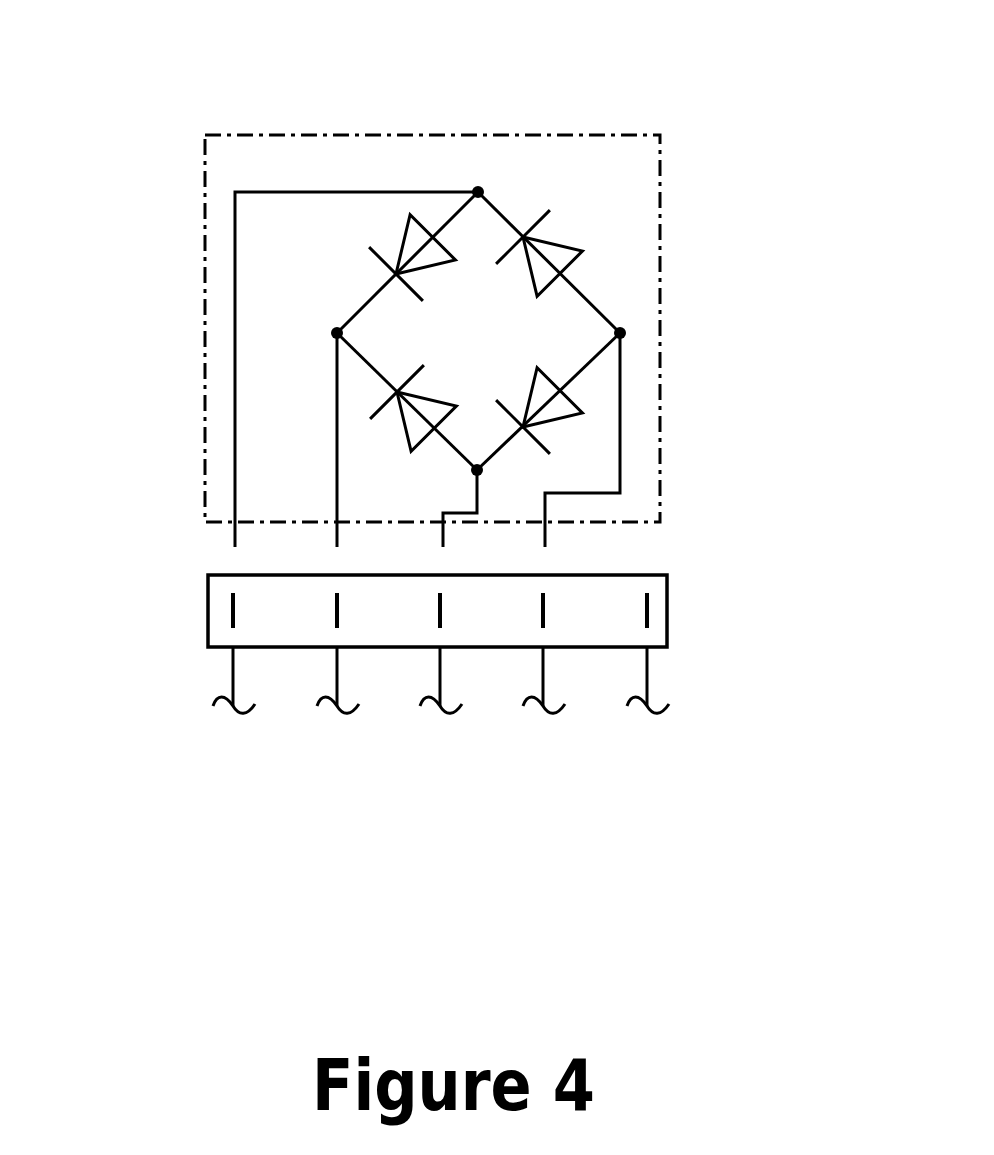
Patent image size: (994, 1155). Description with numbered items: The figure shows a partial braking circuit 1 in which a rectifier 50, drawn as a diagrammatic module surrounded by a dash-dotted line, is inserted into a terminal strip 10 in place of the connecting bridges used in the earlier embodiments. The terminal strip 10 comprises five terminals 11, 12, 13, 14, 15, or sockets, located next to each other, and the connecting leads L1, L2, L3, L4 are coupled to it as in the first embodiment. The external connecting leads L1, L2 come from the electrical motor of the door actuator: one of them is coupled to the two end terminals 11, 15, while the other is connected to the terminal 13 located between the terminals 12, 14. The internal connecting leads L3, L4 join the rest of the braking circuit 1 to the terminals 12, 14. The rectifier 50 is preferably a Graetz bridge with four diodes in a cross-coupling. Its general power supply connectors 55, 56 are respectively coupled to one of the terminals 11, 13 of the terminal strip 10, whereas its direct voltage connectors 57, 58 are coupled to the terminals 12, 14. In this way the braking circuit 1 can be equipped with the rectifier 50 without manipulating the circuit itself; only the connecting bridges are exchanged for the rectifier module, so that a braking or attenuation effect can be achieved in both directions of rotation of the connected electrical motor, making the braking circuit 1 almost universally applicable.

The braking circuit 1 is at (727, 586).
The terminal strip 10 is at (667, 575).
The terminal 11 is at (233, 607).
The terminal 12 is at (337, 607).
The terminal 13 is at (440, 607).
The terminal 14 is at (545, 607).
The terminal 15 is at (648, 607).
The rectifier 50 is at (497, 135).
The general power supply connector 55 is at (451, 166).
The general power supply connector 56 is at (524, 461).
The direct voltage connector 57 is at (301, 320).
The direct voltage connector 58 is at (662, 333).
The external connecting lead L1 is at (233, 682).
The external connecting lead L2 is at (437, 677).
The internal connecting lead L3 is at (333, 677).
The internal connecting lead L4 is at (540, 677).